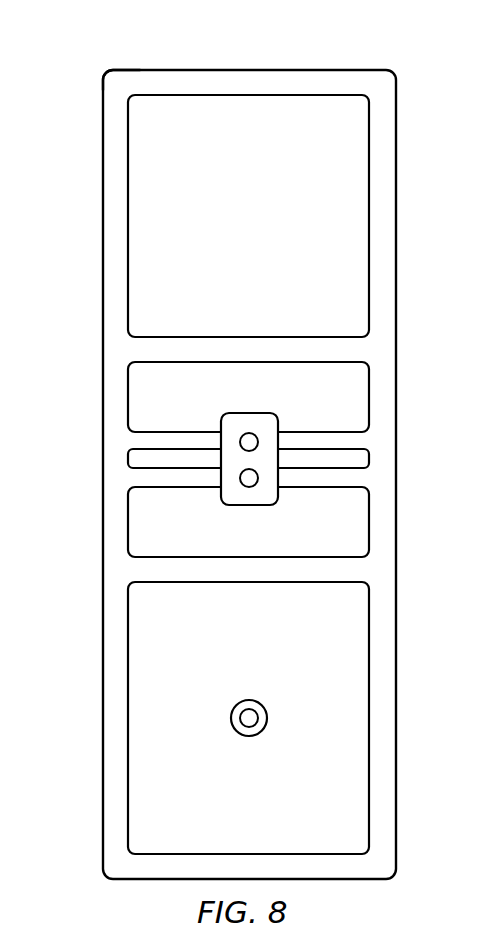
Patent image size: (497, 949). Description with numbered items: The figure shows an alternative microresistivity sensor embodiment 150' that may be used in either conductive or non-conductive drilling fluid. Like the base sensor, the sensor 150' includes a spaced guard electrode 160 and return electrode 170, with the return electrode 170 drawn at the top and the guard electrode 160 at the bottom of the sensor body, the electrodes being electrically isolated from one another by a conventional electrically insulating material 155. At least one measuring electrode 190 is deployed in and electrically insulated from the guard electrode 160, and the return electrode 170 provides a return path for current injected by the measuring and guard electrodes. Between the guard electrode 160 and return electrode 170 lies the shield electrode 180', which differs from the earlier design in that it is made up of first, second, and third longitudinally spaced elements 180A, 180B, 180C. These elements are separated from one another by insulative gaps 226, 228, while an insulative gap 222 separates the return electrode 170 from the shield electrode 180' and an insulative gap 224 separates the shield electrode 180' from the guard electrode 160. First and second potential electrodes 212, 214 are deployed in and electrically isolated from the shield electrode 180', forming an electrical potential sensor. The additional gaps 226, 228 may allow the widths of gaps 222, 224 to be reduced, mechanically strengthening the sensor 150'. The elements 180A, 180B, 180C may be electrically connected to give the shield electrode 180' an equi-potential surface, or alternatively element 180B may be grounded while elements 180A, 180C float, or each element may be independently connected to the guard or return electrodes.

The alternative sensor embodiment 150' is at (249, 445).
The electrically insulating material 155 is at (125, 81).
The return electrode 170 is at (269, 228).
The shield electrode 180' is at (203, 432).
The first element 180A is at (128, 400).
The second element 180B is at (128, 459).
The third element 180C is at (128, 517).
The first potential electrode 212 is at (249, 433).
The second potential electrode 214 is at (248, 487).
The guard electrode 160 is at (269, 656).
The measuring electrode 190 is at (252, 736).
The insulative gap 222 is at (363, 352).
The insulative gap 226 is at (363, 442).
The insulative gap 228 is at (363, 477).
The insulative gap 224 is at (363, 568).